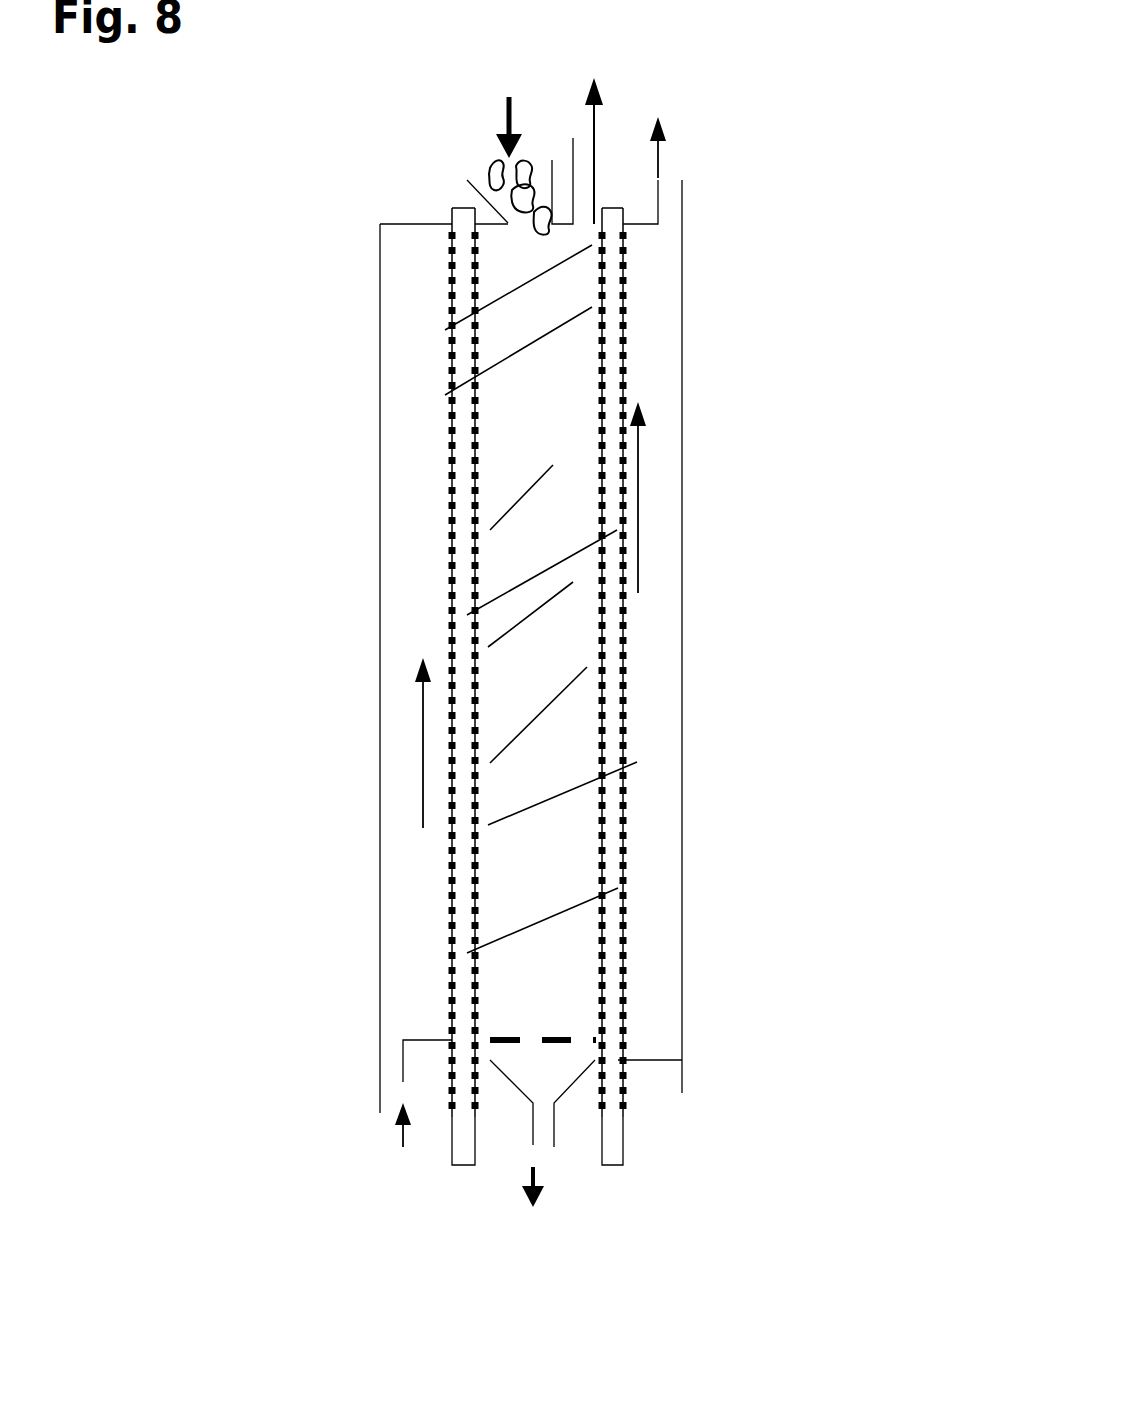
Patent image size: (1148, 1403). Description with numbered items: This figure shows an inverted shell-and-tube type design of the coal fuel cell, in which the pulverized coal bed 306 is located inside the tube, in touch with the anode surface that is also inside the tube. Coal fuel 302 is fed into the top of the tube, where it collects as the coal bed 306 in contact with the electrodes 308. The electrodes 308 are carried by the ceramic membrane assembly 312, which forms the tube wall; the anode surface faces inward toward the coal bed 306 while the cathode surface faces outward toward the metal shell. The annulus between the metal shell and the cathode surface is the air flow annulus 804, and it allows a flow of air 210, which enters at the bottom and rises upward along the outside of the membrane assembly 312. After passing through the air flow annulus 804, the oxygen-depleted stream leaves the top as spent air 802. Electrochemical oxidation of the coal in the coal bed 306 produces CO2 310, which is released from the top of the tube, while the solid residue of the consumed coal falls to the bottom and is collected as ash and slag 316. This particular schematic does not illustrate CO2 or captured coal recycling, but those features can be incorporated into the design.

The coal fuel 302 is at (452, 139).
The CO2 310 is at (574, 122).
The spent air 802 is at (715, 170).
The electrodes 308 is at (724, 863).
The air flow annulus 804 is at (676, 514).
The coal bed 306 is at (552, 660).
The air 210 is at (412, 1129).
The ash and slag 316 is at (543, 1147).
The membrane assembly 312 is at (657, 1135).